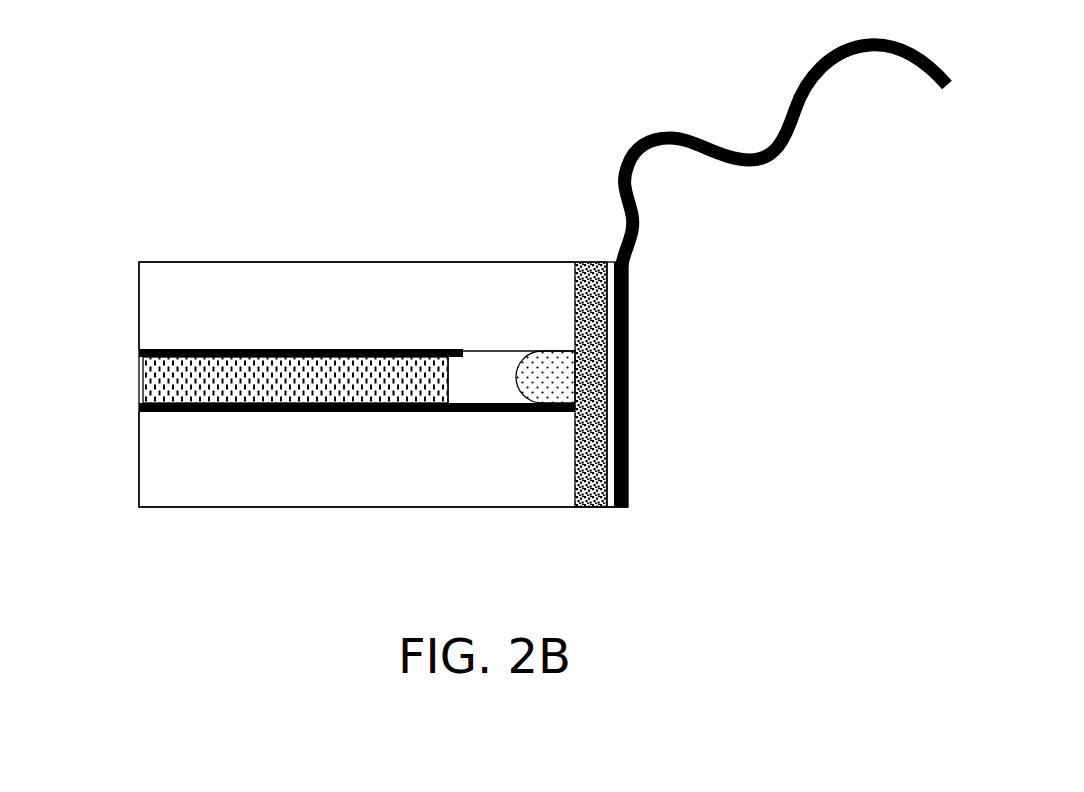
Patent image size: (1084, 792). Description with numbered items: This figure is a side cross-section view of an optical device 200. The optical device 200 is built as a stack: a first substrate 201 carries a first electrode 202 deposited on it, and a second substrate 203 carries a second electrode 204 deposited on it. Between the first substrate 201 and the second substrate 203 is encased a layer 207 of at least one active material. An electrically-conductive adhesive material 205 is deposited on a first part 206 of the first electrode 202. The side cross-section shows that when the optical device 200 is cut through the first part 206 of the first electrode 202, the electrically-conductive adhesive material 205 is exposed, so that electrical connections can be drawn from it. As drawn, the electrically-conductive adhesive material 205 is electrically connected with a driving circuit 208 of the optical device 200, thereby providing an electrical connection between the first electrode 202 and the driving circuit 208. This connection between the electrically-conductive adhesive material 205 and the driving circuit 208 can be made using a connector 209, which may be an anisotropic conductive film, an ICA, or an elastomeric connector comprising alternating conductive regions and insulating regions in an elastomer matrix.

The optical device 200 is at (150, 140).
The first substrate 201 is at (257, 493).
The first electrode 202 is at (150, 412).
The second substrate 203 is at (237, 272).
The second electrode 204 is at (158, 348).
The electrically-conductive adhesive material 205 is at (552, 392).
The first part of the first electrode 206 is at (536, 424).
The layer of at least one active material 207 is at (147, 377).
The driving circuit 208 is at (627, 350).
The connector 209 is at (608, 448).